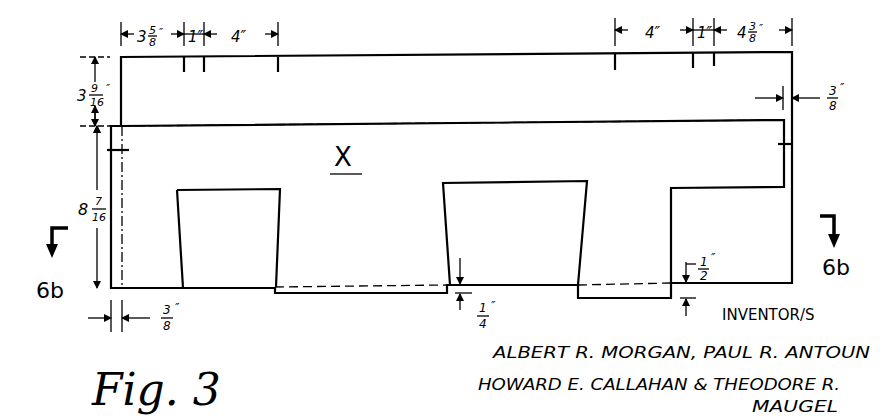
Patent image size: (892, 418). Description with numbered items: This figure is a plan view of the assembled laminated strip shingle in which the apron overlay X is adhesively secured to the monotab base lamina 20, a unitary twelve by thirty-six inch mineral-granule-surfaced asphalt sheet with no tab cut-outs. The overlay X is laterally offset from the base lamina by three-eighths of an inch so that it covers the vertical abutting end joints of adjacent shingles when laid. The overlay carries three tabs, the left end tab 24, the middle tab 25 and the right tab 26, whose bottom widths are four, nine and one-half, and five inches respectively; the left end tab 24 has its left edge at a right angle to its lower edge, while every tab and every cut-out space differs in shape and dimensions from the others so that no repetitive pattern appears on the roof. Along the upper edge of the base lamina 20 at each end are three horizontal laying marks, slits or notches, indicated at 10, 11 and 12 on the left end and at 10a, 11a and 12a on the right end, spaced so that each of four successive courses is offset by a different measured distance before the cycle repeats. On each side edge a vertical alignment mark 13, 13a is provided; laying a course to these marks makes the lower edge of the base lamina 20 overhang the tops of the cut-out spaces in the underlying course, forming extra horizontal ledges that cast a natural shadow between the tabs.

The laying mark 10 is at (184, 68).
The laying mark 11 is at (204, 68).
The laying mark 12 is at (278, 68).
The laying mark 10a is at (714, 64).
The laying mark 11a is at (693, 66).
The laying mark 12a is at (615, 68).
The vertical alignment mark 13 is at (124, 152).
The vertical alignment mark 13a is at (776, 144).
The monotab base lamina 20 is at (444, 102).
The left end tab 24 is at (160, 257).
The tab 25 is at (397, 270).
The tab 26 is at (590, 206).